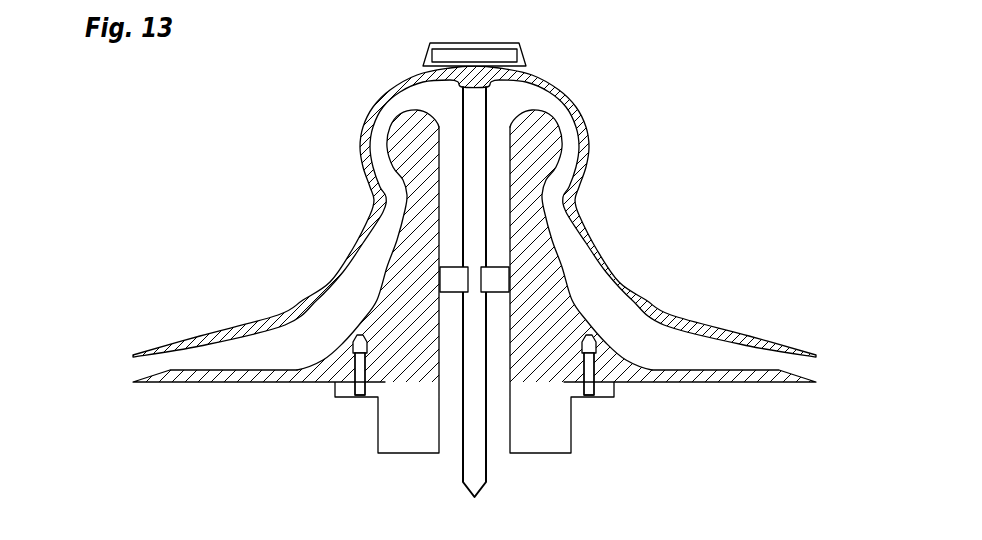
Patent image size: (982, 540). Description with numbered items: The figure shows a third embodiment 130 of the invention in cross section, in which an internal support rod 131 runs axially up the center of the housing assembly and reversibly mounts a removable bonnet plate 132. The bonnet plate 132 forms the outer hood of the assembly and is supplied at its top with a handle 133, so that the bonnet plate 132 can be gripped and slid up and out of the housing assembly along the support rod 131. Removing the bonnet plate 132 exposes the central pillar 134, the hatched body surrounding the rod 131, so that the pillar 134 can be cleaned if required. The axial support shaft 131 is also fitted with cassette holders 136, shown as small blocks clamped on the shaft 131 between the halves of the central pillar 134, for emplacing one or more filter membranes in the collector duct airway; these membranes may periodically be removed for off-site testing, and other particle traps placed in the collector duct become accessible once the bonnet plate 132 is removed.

The third embodiment 130 is at (150, 172).
The internal support rod 131 is at (487, 465).
The removable bonnet plate 132 is at (195, 327).
The handle 133 is at (495, 42).
The central pillar 134 is at (373, 263).
The cassette holders 136 is at (497, 278).